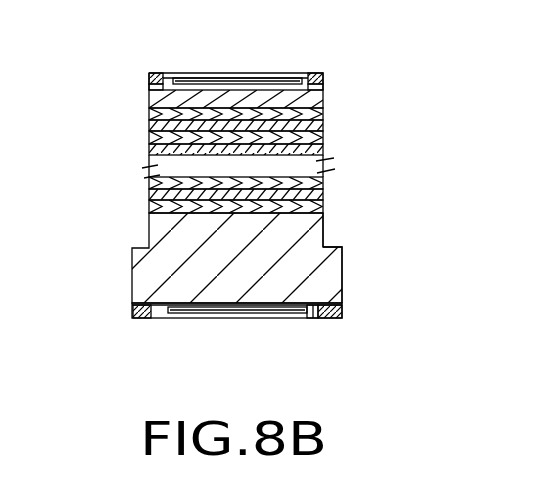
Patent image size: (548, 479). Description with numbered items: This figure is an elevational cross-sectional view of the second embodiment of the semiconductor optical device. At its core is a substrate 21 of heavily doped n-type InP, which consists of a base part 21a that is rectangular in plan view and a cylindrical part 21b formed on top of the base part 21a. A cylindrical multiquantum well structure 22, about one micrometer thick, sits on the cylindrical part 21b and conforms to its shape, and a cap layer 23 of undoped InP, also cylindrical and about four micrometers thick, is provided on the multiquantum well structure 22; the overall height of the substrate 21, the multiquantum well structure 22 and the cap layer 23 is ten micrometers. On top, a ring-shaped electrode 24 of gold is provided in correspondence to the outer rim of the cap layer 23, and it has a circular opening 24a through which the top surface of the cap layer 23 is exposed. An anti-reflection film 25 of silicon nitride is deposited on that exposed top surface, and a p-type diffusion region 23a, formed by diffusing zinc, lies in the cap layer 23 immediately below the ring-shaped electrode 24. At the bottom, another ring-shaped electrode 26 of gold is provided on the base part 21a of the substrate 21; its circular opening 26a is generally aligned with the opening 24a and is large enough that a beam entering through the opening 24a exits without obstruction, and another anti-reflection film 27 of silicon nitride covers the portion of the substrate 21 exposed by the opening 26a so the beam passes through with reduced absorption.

The substrate 21 is at (124, 223).
The base part 21a is at (341, 280).
The cylindrical part 21b is at (326, 234).
The multiquantum well structure 22 is at (143, 110).
The cap layer 23 is at (149, 101).
The diffusion region 23a is at (149, 90).
The ring-shaped electrode 24 is at (313, 73).
The circular opening 24a is at (155, 73).
The anti-reflection film 25 is at (243, 79).
The ring-shaped electrode 26 is at (337, 318).
The circular opening 26a is at (310, 318).
The anti-reflection film 27 is at (253, 315).